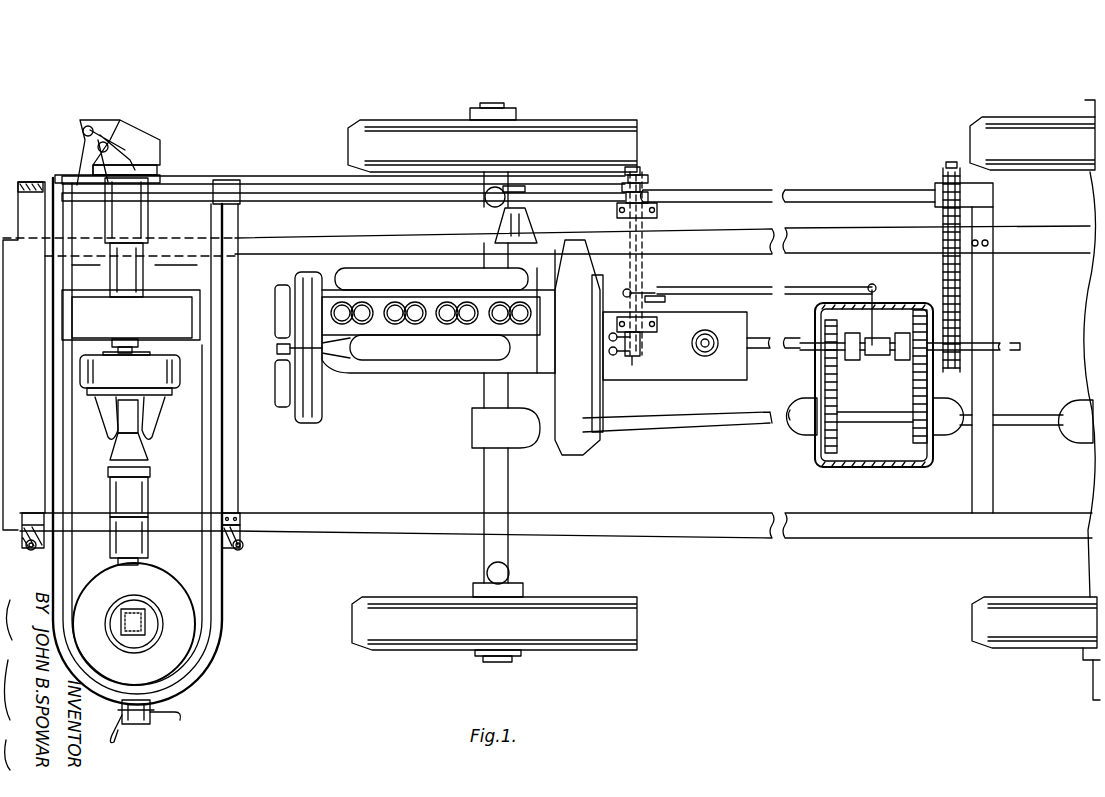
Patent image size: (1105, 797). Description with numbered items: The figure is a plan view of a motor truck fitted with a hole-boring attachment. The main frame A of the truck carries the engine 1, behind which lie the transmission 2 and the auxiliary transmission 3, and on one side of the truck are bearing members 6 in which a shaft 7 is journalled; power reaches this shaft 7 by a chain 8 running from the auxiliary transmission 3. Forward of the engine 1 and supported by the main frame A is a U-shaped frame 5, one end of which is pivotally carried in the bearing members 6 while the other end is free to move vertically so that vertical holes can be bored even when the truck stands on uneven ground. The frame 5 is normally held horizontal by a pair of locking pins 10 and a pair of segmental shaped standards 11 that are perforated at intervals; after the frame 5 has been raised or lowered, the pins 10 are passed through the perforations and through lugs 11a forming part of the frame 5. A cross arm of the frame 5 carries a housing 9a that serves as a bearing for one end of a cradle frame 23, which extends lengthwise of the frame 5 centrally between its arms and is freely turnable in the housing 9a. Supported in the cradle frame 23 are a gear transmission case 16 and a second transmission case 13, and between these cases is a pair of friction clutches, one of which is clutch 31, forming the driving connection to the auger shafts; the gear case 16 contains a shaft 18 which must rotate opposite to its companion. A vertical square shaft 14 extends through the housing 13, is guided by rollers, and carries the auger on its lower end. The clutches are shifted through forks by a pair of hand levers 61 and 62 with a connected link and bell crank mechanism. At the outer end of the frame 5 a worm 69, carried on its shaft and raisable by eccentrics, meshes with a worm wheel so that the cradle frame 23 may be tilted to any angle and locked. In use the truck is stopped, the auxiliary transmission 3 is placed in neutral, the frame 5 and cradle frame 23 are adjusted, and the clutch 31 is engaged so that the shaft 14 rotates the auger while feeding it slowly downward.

The main frame A is at (535, 132).
The engine 1 is at (380, 325).
The transmission 2 is at (147, 267).
The auxiliary transmission 3 is at (838, 375).
The U-shaped frame 5 is at (50, 410).
The bearing members 6 is at (36, 190).
The shaft 7 is at (728, 188).
The chain 8 is at (943, 264).
The housing 9a is at (150, 224).
The locking pins 10 is at (241, 552).
The segmental shaped standards 11 is at (244, 536).
The lugs 11a is at (240, 518).
The second transmission case 13 is at (137, 440).
The shaft 14 is at (145, 622).
The gear transmission case 16 is at (131, 315).
The shaft 18 is at (118, 342).
The cradle frame 23 is at (112, 452).
The friction clutch 31 is at (130, 375).
The hand lever 61 is at (617, 336).
The hand lever 62 is at (607, 382).
The worm 69 is at (132, 725).